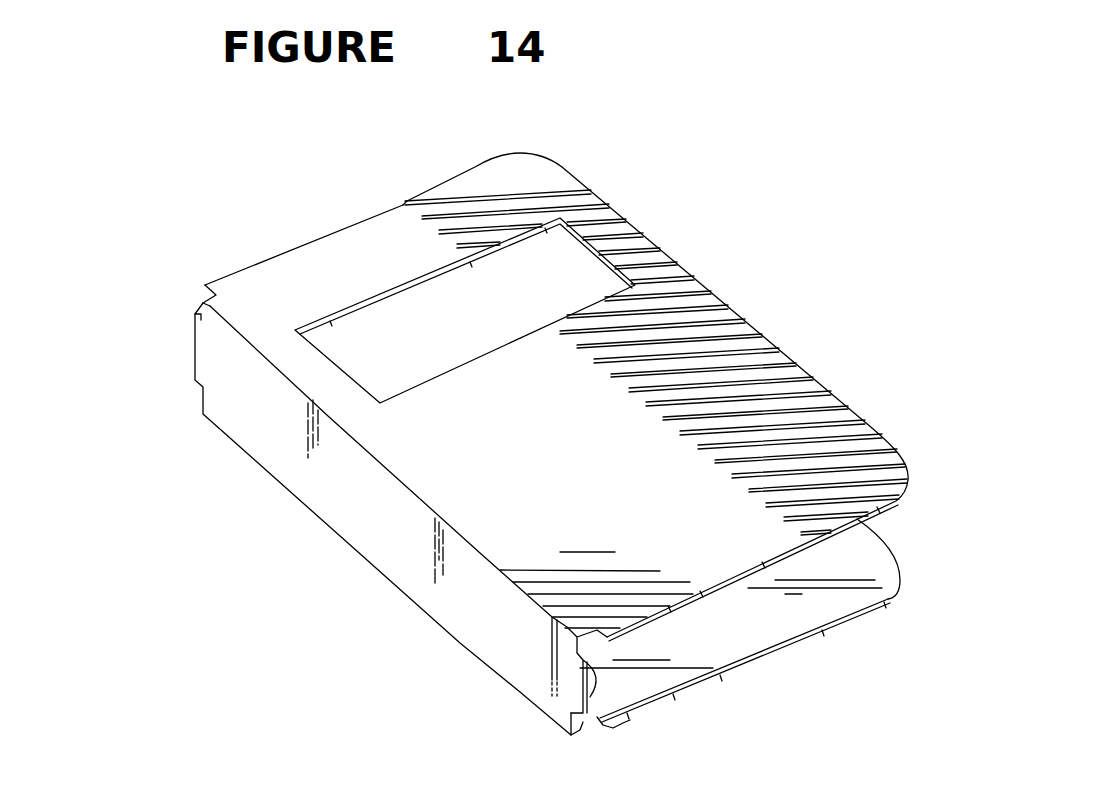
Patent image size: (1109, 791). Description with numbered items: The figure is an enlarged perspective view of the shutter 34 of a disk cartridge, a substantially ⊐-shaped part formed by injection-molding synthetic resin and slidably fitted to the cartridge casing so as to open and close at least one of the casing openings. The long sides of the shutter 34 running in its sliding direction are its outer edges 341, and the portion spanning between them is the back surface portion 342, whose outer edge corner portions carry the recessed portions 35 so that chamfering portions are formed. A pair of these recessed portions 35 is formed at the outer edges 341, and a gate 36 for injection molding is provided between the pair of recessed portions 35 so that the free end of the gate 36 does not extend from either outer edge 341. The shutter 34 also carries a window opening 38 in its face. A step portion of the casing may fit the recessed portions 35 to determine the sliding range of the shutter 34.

The shutter 34 is at (658, 226).
The outer edge 341 is at (362, 222).
The back surface portion 342 is at (392, 527).
The window opening in top cover 38 is at (364, 321).
The gate 36 is at (195, 348).
The recessed portion 35 is at (195, 397).